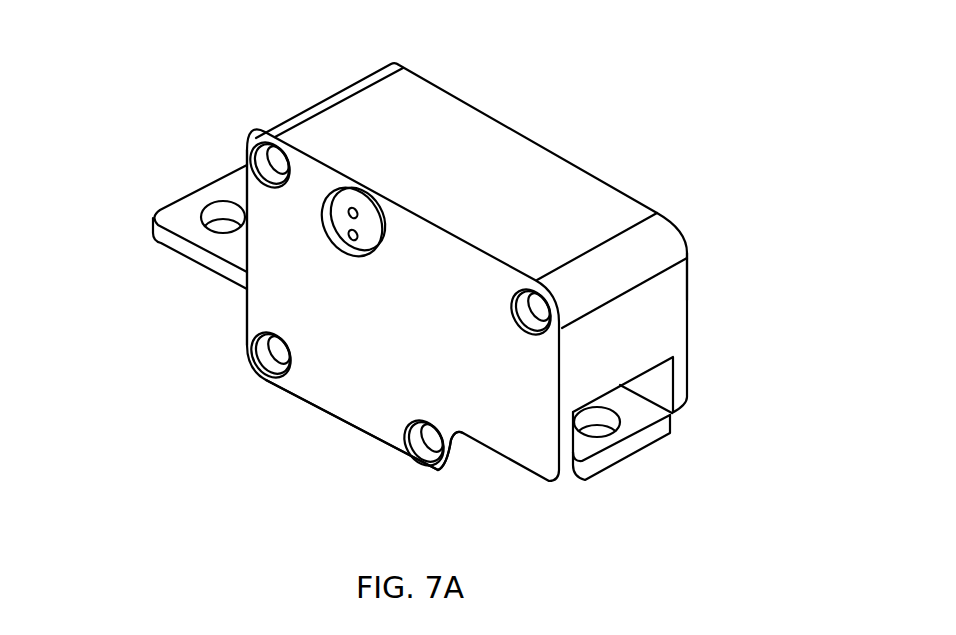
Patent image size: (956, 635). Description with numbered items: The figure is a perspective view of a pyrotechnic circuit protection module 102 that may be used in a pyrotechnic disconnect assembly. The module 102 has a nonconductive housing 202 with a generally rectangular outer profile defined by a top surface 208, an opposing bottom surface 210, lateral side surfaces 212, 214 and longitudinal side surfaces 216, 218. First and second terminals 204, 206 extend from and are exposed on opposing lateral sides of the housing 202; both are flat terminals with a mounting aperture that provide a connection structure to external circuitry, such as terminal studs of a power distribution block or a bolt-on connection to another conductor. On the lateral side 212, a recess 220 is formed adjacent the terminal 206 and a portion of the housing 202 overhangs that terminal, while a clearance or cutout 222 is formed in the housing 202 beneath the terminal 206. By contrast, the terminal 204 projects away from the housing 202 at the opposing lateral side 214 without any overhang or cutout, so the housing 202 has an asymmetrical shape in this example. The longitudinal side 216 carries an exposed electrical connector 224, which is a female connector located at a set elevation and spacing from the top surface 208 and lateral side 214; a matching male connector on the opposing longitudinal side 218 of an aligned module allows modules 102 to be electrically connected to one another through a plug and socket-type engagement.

The pyrotechnic circuit protection module 102 is at (583, 92).
The nonconductive housing 202 is at (637, 189).
The first terminal 204 is at (167, 237).
The second terminal 206 is at (627, 453).
The top surface 208 is at (447, 112).
The bottom surface 210 is at (361, 430).
The lateral side surface 212 is at (662, 333).
The lateral side surface 214 is at (246, 313).
The longitudinal side surface 216 is at (342, 392).
The longitudinal side surface 218 is at (688, 283).
The recess 220 is at (662, 388).
The cutout 222 is at (447, 466).
The electrical connector 224 is at (369, 236).